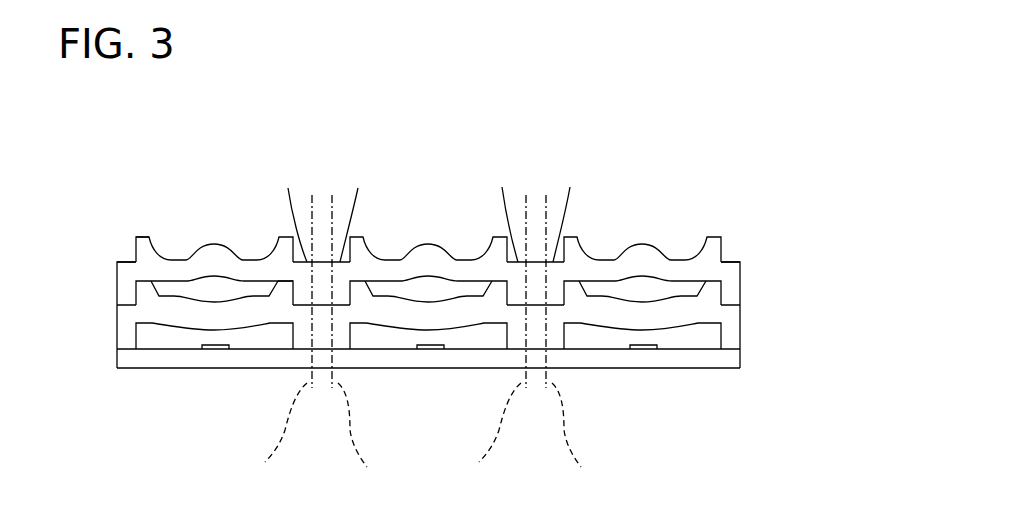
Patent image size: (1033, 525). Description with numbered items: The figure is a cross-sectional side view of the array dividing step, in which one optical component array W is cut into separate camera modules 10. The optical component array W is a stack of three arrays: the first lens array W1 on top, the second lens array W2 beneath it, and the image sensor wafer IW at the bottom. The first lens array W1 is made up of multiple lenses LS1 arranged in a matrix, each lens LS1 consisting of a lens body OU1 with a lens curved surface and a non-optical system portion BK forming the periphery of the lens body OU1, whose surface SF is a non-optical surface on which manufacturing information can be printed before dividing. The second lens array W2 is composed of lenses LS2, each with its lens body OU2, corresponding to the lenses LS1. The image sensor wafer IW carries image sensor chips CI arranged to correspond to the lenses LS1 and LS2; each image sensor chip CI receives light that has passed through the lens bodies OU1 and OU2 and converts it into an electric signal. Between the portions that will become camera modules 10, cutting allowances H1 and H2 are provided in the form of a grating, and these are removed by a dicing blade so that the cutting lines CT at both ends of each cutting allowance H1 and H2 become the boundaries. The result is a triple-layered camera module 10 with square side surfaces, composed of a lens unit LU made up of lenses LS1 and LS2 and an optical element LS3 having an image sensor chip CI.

The camera module 10 is at (205, 172).
The optical component array W is at (742, 94).
The first lens array W1 is at (740, 275).
The second lens array W2 is at (740, 340).
The image sensor wafer IW is at (738, 362).
The lens unit LU is at (760, 268).
The lens LS1 is at (178, 225).
The lens LS2 is at (192, 289).
The optical element LS3 is at (157, 341).
The surface SF is at (127, 261).
The lens body OU1 is at (141, 237).
The lens body OU2 is at (281, 281).
The non-optical system portion BK is at (429, 213).
The cutting allowance H1 is at (323, 262).
The cutting allowance H2 is at (429, 291).
The image sensor chip CI is at (202, 345).
The cutting line CT is at (421, 433).